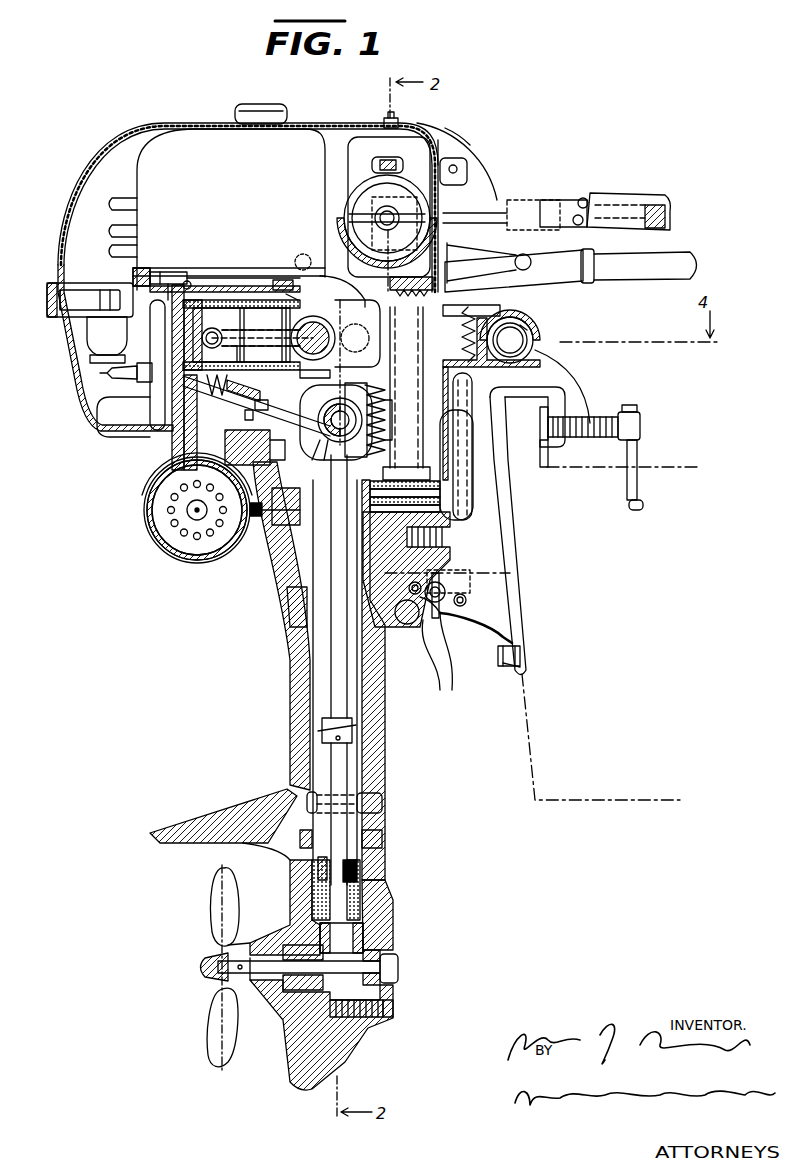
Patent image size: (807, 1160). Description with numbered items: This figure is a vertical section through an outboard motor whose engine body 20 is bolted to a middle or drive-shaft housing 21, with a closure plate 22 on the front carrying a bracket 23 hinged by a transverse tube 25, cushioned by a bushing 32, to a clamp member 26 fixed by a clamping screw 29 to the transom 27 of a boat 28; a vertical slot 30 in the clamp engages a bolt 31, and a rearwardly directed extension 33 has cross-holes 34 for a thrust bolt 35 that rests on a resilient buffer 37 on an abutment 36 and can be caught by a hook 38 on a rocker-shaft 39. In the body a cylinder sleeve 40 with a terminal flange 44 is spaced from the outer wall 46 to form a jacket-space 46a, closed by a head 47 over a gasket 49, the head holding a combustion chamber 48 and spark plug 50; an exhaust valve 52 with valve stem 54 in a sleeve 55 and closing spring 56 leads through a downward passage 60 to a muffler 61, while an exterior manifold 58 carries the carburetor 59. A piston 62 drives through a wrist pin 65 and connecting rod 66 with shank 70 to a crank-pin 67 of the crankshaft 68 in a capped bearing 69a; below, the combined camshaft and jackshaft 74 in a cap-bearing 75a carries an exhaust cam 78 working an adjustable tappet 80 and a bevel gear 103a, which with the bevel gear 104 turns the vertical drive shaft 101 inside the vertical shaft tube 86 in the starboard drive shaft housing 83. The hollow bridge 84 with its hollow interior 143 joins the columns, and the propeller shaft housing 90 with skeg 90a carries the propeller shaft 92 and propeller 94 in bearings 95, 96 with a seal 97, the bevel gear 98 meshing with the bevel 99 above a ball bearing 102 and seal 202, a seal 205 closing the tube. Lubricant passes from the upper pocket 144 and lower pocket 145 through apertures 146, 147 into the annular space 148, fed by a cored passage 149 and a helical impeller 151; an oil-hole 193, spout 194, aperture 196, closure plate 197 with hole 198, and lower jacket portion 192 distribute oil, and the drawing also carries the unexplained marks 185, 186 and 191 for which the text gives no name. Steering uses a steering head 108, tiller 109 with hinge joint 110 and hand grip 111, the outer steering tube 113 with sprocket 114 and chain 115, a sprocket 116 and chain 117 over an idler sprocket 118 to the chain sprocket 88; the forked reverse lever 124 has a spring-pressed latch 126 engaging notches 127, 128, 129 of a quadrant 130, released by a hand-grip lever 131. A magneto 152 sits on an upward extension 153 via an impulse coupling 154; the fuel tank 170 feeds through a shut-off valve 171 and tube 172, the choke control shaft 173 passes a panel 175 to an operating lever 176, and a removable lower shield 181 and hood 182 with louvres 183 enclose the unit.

The engine body 20 is at (280, 268).
The middle or drive-shaft housing 21 is at (300, 560).
The closure plate 22 is at (475, 470).
The bracket 23 is at (530, 322).
The transverse tube 25 is at (525, 337).
The clamp member 26 is at (566, 366).
The transom 27 is at (528, 408).
The boat 28 is at (663, 467).
The clamping screw 29 is at (628, 408).
The vertical slot 30 is at (525, 652).
The bolt 31 is at (500, 668).
The bushing 32 is at (542, 310).
The rearwardly directed extension 33 is at (478, 630).
The cross-hole 34 is at (467, 600).
The thrust bolt 35 is at (448, 656).
The abutment 36 is at (424, 658).
The resilient buffer 37 is at (510, 570).
The hook 38 is at (440, 622).
The rocker-shaft 39 is at (405, 624).
The cylinder sleeve 40 is at (230, 268).
The terminal flange 44 is at (190, 275).
The outer wall 46 is at (230, 268).
The jacket-space 46a is at (228, 268).
The head 47 is at (166, 282).
The combustion chamber 48 is at (137, 437).
The gasket 49 is at (164, 270).
The spark plug 50 is at (130, 375).
The exhaust valve 52 is at (172, 445).
The valve stem 54 is at (160, 470).
The sleeve 55 is at (248, 421).
The closing spring 56 is at (262, 410).
The exterior manifold 58 is at (100, 437).
The carburetor 59 is at (107, 338).
The downward passage 60 is at (148, 490).
The muffler 61 is at (160, 525).
The piston 62 is at (236, 320).
The wrist pin 65 is at (215, 330).
The connecting rod 66 is at (262, 346).
The crank-pin 67 is at (318, 316).
The crankshaft 68 is at (345, 315).
The capped bearing 69a is at (395, 378).
The shank 70 is at (243, 356).
The combined camshaft and jackshaft 74 is at (386, 412).
The cap-bearing 75a is at (405, 420).
The exhaust cam 78 is at (322, 410).
The adjustable tappet 80 is at (262, 420).
The starboard column or drive shaft housing 83 is at (290, 707).
The hollow bridge 84 is at (242, 815).
The vertical shaft tube 86 is at (352, 740).
The chain sprocket 88 is at (262, 540).
The propeller shaft housing 90 is at (280, 925).
The skeg 90a is at (335, 1075).
The propeller shaft 92 is at (225, 966).
The propeller 94 is at (210, 1050).
The bearing 95 is at (268, 990).
The bearing 96 is at (400, 962).
The seal 97 is at (207, 980).
The bevel gear 98 is at (305, 952).
The bevel 99 is at (392, 928).
The vertical drive shaft 101 is at (348, 770).
The ball bearing 102 is at (390, 890).
The bevel gear 103a is at (450, 378).
The bevel gear 104 is at (380, 458).
The steering head 108 is at (468, 170).
The steering handle or tiller 109 is at (555, 252).
The hinge joint 110 is at (506, 289).
The hand grip portion 111 is at (651, 276).
The outer steering tube or sleeve 113 is at (473, 432).
The sprocket 114 is at (442, 484).
The chain 115 is at (442, 493).
The sprocket 116 is at (442, 501).
The chain 117 is at (452, 512).
The idler sprocket 118 is at (255, 520).
The forked reverse lever 124 is at (578, 193).
The spring-pressed latch 126 is at (560, 197).
The notch 127 is at (500, 198).
The notch 128 is at (470, 158).
The notch 129 is at (399, 122).
The quadrant 130 is at (470, 148).
The hand-grip lever 131 is at (666, 218).
The hollow interior 143 is at (260, 830).
The upper pocket 144 is at (290, 612).
The lower pocket 145 is at (383, 803).
The aperture 146 is at (300, 580).
The aperture 147 is at (383, 810).
The annular space 148 is at (350, 700).
The cored passage 149 is at (220, 468).
The helical impeller 151 is at (352, 728).
The magneto 152 is at (440, 137).
The upward extension 153 is at (380, 182).
The impulse coupling 154 is at (372, 246).
The fuel tank 170 is at (302, 128).
The shut-off valve 171 is at (143, 266).
The tube 172 is at (130, 276).
The choke control shaft 173 is at (301, 254).
The panel or dashboard 175 is at (440, 226).
The operating lever 176 is at (458, 258).
The removable lower shield 181 is at (110, 420).
The hood 182 is at (80, 178).
The louvre 183 is at (112, 226).
The fitting 185 is at (187, 280).
The spark plug 186 is at (140, 345).
The key 191 is at (312, 439).
The lower portion of jacket 192 is at (320, 372).
The oil-hole 193 is at (278, 292).
The spout 194 is at (295, 293).
The aperture 196 is at (232, 382).
The closure plate 197 is at (246, 448).
The hole 198 is at (272, 462).
The seal 202 is at (388, 866).
The seal 205 is at (385, 838).